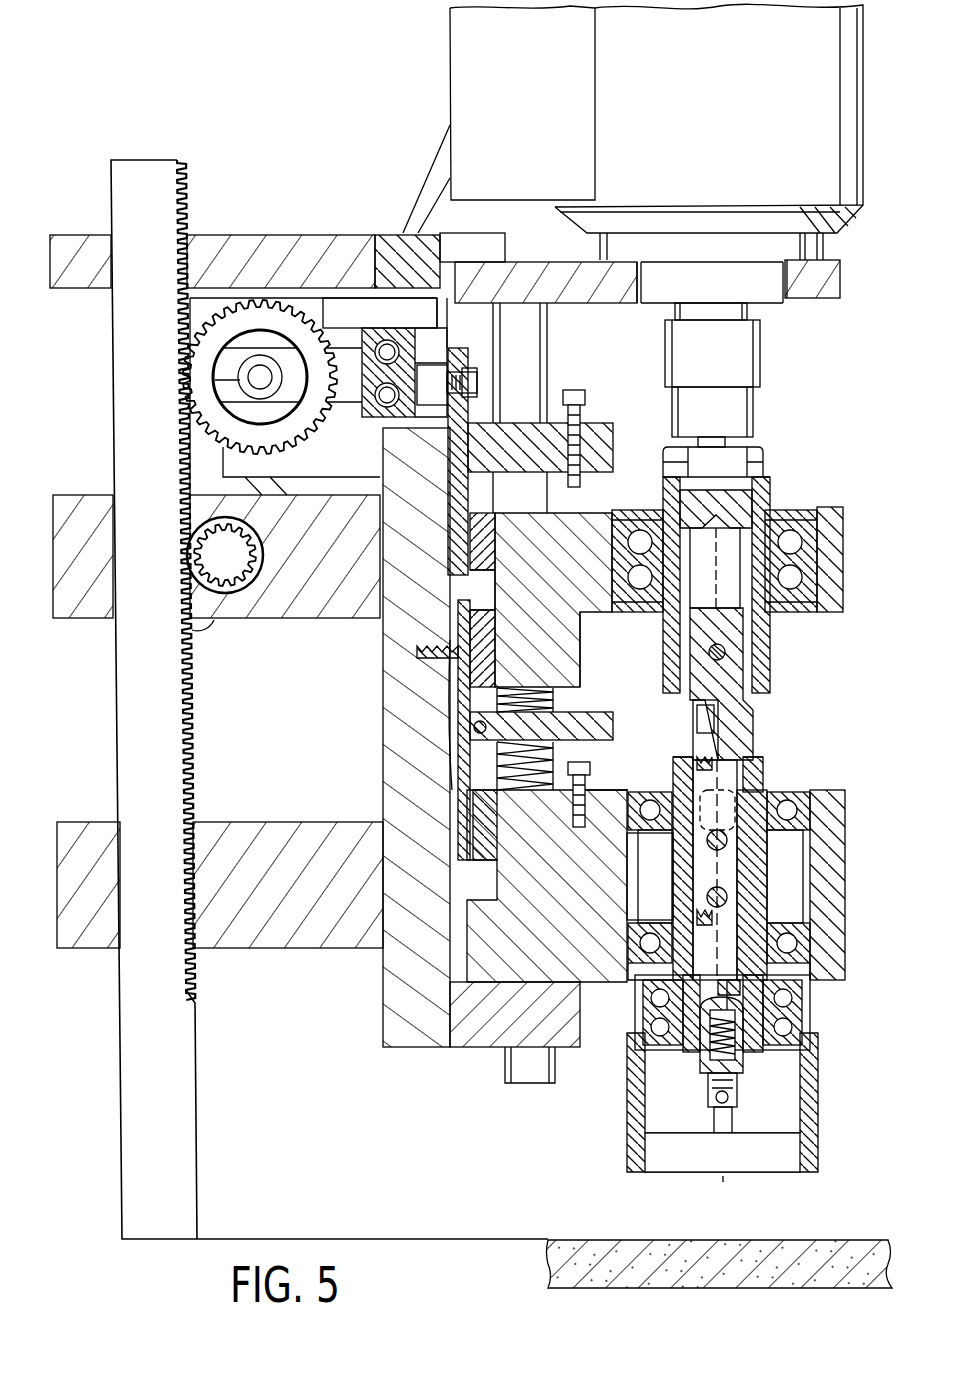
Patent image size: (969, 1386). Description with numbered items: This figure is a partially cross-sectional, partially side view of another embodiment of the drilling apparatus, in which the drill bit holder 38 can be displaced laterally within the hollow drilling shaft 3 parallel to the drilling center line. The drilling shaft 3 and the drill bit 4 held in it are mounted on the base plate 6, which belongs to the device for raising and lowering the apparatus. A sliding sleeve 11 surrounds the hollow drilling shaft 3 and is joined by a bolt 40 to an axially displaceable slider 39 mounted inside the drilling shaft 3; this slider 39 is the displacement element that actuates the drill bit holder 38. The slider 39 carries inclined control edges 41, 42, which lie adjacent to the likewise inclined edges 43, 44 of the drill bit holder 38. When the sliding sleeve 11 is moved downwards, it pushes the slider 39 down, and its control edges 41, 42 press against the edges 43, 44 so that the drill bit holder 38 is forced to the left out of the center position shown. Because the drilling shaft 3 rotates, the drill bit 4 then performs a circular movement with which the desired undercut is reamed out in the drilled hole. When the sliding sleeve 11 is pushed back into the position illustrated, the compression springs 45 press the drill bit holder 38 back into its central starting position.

The hollow drilling shaft 3 is at (803, 1010).
The drill bit 4 is at (728, 1148).
The base plate 6 is at (410, 1003).
The sliding sleeve 11 is at (763, 682).
The drill bit holder 38 is at (707, 873).
The slider 39 is at (733, 720).
The bolt 40 is at (722, 650).
The inclined control edge 41 is at (705, 742).
The inclined control edge 42 is at (763, 917).
The inclined edge 43 is at (725, 773).
The inclined edge 44 is at (727, 980).
The compression springs 45 is at (700, 745).